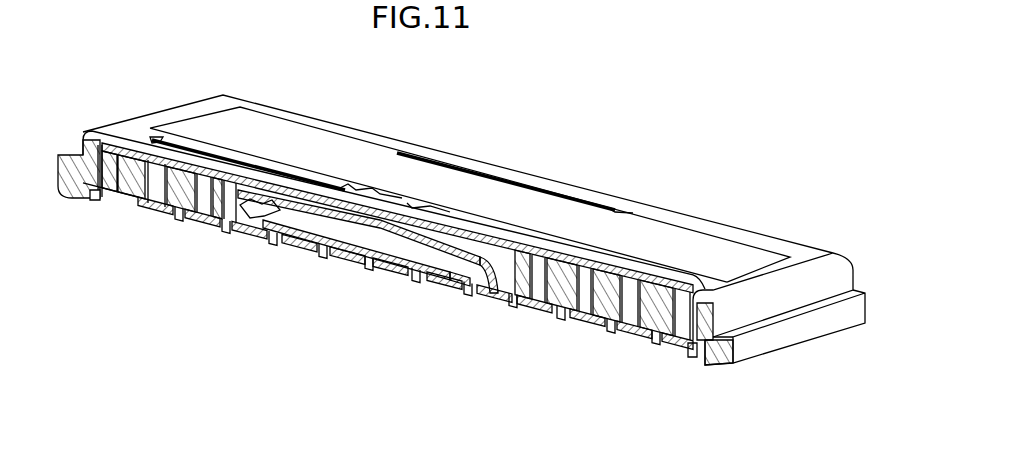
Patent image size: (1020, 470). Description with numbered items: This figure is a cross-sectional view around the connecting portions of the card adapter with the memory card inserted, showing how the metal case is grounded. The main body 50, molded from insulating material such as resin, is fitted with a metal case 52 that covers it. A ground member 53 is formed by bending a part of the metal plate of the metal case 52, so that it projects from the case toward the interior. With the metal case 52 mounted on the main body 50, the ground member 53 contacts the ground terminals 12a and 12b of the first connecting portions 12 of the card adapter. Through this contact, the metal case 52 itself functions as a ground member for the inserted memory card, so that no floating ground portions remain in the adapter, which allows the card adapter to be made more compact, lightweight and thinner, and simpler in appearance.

The first connecting portions 12 is at (203, 210).
The ground terminal 12a is at (487, 300).
The ground terminal 12b is at (247, 237).
The main body 50 is at (197, 108).
The metal case 52 is at (228, 167).
The ground member 53 is at (390, 230).